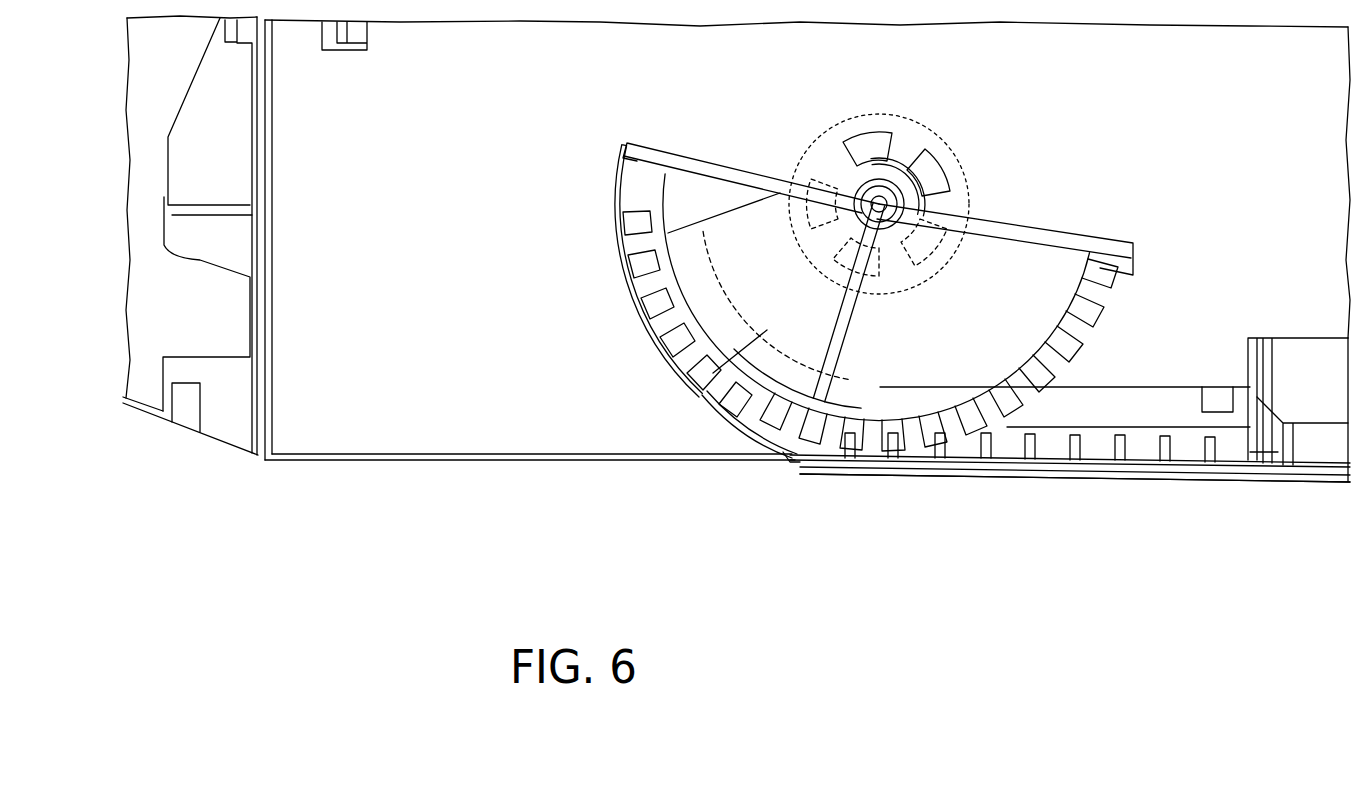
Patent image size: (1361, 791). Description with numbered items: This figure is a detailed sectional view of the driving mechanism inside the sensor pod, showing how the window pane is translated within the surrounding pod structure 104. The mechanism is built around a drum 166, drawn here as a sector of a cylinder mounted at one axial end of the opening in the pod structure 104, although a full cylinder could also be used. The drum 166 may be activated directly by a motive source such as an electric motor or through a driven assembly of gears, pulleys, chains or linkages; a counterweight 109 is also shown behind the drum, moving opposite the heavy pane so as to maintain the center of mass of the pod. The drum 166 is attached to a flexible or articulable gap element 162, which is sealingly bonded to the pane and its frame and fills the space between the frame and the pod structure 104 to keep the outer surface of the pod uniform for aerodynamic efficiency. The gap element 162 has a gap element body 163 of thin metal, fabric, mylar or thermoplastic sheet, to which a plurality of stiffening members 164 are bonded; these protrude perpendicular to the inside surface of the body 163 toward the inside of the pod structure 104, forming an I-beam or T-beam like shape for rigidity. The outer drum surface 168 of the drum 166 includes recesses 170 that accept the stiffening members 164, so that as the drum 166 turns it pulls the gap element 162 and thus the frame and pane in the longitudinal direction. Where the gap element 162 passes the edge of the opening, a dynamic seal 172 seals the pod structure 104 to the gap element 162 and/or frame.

The pod structure 104 is at (443, 413).
The counterweight 109 is at (757, 492).
The drum 166 is at (658, 163).
The recesses 170 is at (760, 340).
The outer drum surface 168 is at (700, 393).
The dynamic seal 172 is at (787, 462).
The stiffening members 164 is at (1123, 448).
The gap element body 163 is at (1100, 470).
The gap element 162 is at (1137, 464).